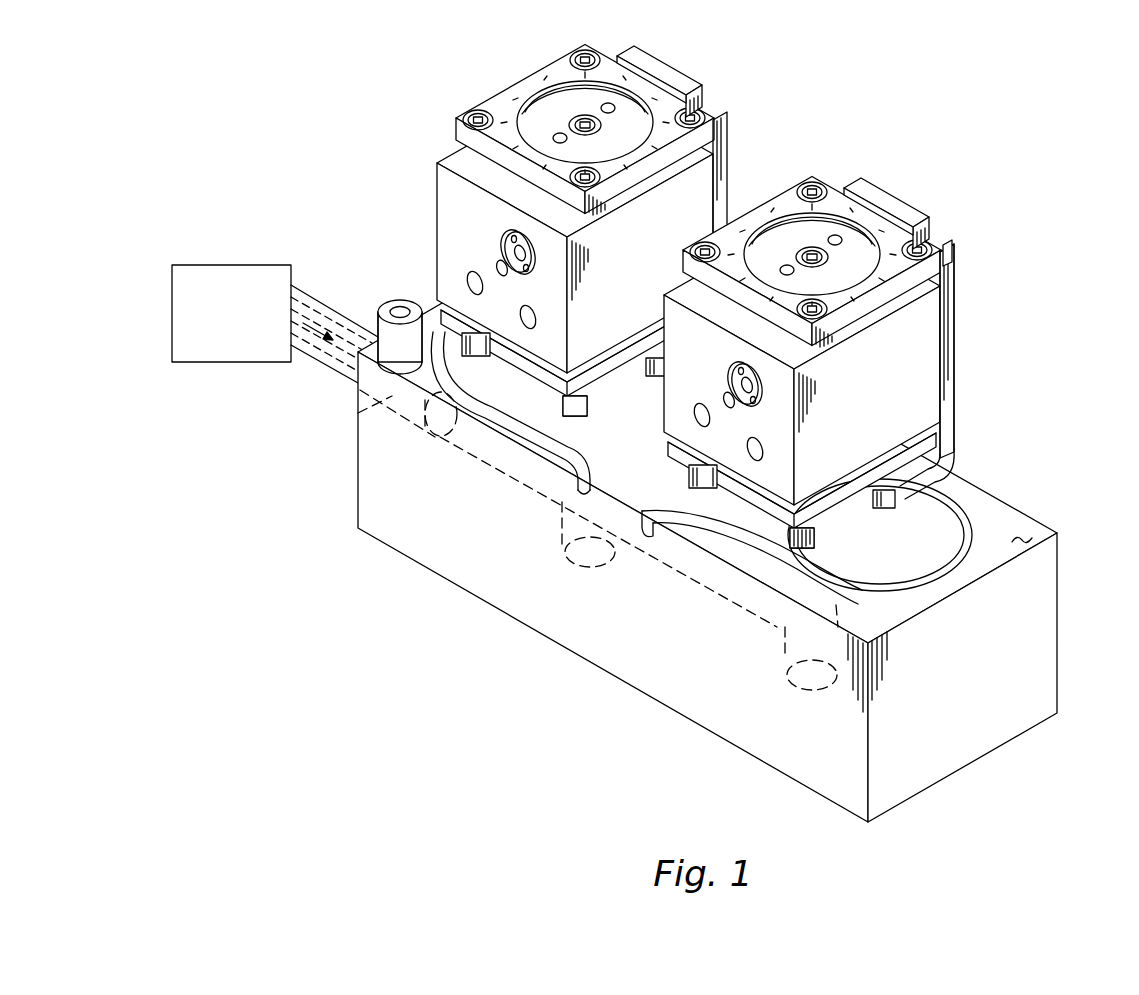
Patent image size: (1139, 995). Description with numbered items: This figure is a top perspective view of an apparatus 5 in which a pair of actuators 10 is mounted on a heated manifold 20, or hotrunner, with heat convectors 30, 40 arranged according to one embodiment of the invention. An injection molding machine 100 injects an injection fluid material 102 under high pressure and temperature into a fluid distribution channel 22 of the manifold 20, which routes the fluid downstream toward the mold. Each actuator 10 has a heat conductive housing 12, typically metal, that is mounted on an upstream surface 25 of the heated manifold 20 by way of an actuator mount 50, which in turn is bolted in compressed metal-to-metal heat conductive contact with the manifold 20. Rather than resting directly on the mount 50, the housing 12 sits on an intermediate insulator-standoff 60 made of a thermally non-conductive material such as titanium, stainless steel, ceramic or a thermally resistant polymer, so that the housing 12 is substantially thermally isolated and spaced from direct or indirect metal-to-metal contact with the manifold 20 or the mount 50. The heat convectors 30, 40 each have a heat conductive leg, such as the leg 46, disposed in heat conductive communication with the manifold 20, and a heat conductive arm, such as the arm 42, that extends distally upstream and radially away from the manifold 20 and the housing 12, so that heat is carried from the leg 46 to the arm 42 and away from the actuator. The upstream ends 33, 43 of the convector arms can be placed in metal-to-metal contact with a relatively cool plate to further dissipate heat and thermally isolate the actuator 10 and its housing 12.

The apparatus 5 is at (400, 86).
The actuator 10 is at (734, 387).
The actuator housing 12 is at (707, 188).
The heated manifold 20 is at (732, 532).
The fluid distribution channel 22 is at (358, 413).
The upstream surface 25 is at (1020, 514).
The heat convector 30 is at (688, 72).
The upstream end 33 is at (912, 207).
The heat convector 40 is at (965, 354).
The heat conductive arm 42 is at (957, 328).
The upstream end 43 is at (947, 249).
The heat conductive leg 46 is at (863, 520).
The actuator mount 50 is at (862, 516).
The insulator-standoff 60 is at (932, 432).
The injection molding machine 100 is at (254, 329).
The injection fluid material 102 is at (318, 311).